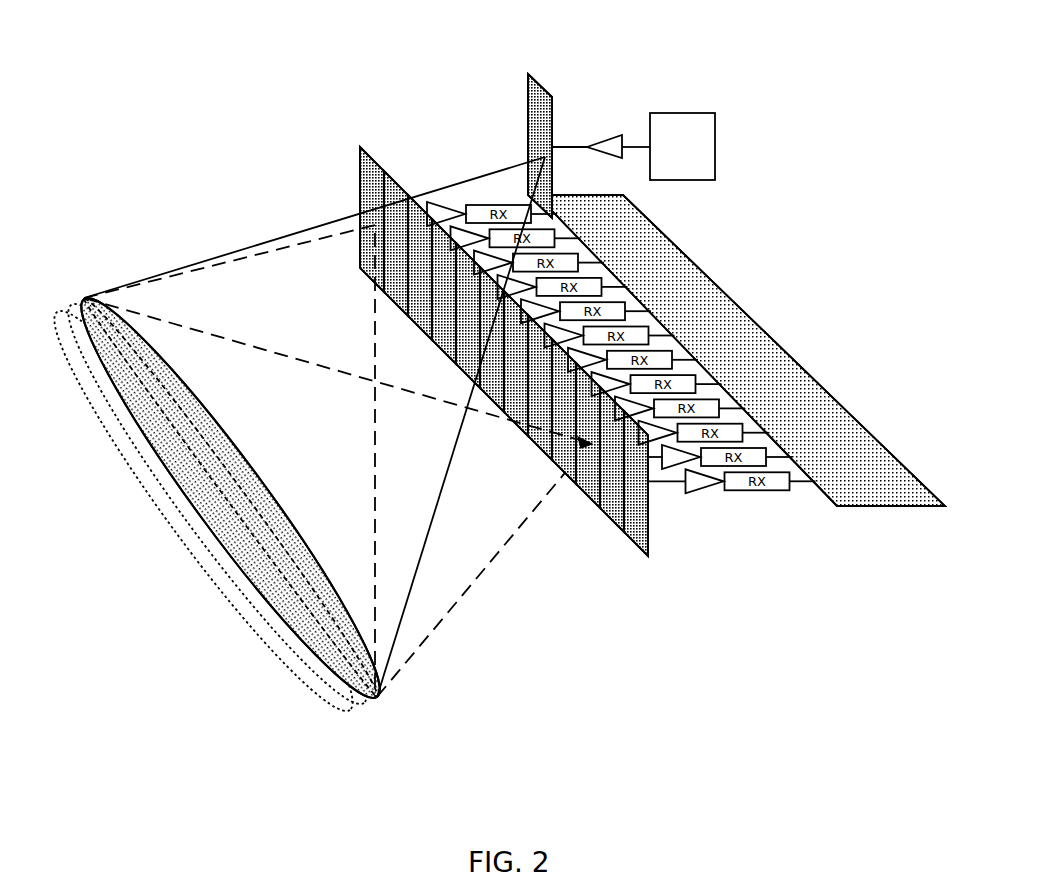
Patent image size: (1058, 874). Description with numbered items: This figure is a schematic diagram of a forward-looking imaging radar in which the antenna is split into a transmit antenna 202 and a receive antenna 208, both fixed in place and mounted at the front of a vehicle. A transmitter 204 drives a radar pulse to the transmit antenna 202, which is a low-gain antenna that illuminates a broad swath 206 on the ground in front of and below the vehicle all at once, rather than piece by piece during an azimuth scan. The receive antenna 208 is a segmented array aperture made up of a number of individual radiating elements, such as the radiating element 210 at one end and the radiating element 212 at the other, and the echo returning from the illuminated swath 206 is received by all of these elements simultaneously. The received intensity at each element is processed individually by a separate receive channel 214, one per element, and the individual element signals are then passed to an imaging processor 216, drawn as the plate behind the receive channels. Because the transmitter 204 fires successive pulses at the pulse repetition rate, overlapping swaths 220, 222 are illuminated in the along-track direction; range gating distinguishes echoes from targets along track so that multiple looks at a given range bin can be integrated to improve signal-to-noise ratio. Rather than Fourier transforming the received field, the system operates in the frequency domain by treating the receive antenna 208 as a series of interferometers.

The transmit antenna 202 is at (544, 85).
The transmitter 204 is at (688, 113).
The swath 206 is at (86, 295).
The receive antenna 208 is at (445, 328).
The radiating element 210 is at (375, 155).
The radiating element 212 is at (582, 492).
The receive channel 214 is at (757, 492).
The imaging processor 216 is at (883, 508).
The overlapping swath 220 is at (358, 708).
The overlapping swath 222 is at (318, 703).